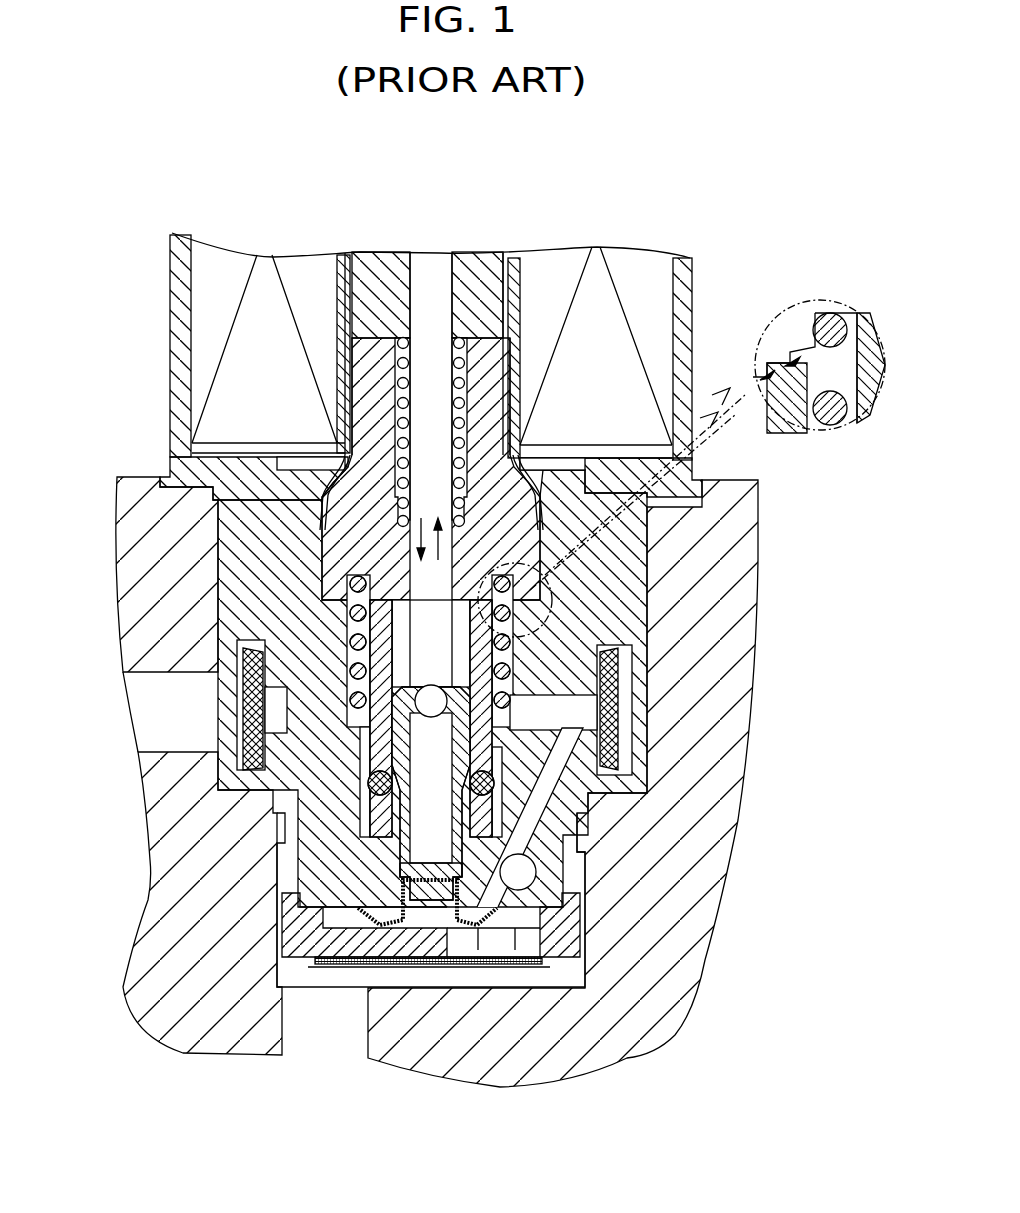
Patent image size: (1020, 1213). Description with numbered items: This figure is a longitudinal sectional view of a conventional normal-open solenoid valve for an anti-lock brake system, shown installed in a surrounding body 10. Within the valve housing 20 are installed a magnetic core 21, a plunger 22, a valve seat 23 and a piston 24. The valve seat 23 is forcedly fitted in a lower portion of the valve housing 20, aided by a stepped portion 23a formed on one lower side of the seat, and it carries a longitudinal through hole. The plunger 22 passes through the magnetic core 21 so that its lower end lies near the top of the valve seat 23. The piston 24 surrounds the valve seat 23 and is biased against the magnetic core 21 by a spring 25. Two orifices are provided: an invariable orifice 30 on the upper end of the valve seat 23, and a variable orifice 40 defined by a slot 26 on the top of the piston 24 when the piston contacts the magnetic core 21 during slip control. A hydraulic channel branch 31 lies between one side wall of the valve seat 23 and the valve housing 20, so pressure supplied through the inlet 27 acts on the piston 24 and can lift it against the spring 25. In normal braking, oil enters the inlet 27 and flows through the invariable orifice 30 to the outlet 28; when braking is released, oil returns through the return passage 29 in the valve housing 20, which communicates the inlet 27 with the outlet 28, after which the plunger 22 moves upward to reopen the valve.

The valve body 10 is at (703, 781).
The valve housing 20 is at (633, 590).
The magnetic core 21 is at (350, 487).
The plunger 22 is at (430, 264).
The valve seat 23 is at (300, 810).
The stepped portion 23a is at (295, 870).
The piston 24 is at (330, 640).
The spring 25 is at (355, 596).
The slot 26 is at (807, 353).
The inlet 27 is at (432, 905).
The outlet 28 is at (545, 719).
The return passage 29 is at (545, 818).
The invariable orifice 30 is at (245, 690).
The hydraulic channel branch 31 is at (560, 870).
The variable orifice 40 is at (760, 376).